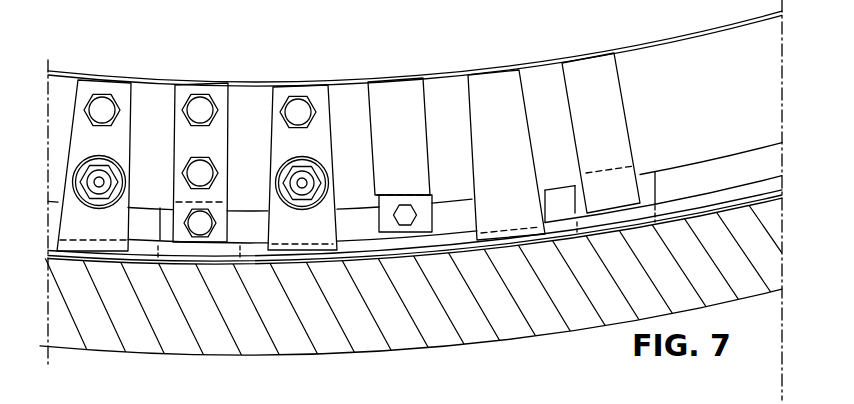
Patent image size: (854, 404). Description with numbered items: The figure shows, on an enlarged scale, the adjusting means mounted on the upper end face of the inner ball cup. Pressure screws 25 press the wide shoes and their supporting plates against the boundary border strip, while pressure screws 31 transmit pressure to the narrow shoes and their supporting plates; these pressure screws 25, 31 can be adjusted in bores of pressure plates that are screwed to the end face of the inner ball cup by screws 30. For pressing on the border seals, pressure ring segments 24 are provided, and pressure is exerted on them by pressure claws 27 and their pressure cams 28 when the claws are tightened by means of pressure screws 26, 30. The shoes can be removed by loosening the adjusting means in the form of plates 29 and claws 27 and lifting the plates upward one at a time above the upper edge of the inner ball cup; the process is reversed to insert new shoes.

The pressure ring segment 24 is at (742, 193).
The pressure screw 25 is at (407, 218).
The pressure screw 26 is at (110, 183).
The pressure claw 27 is at (73, 236).
The pressure cam 28 is at (110, 247).
The plate 29 is at (178, 142).
The screw 30 is at (104, 100).
The pressure screw 31 is at (194, 235).